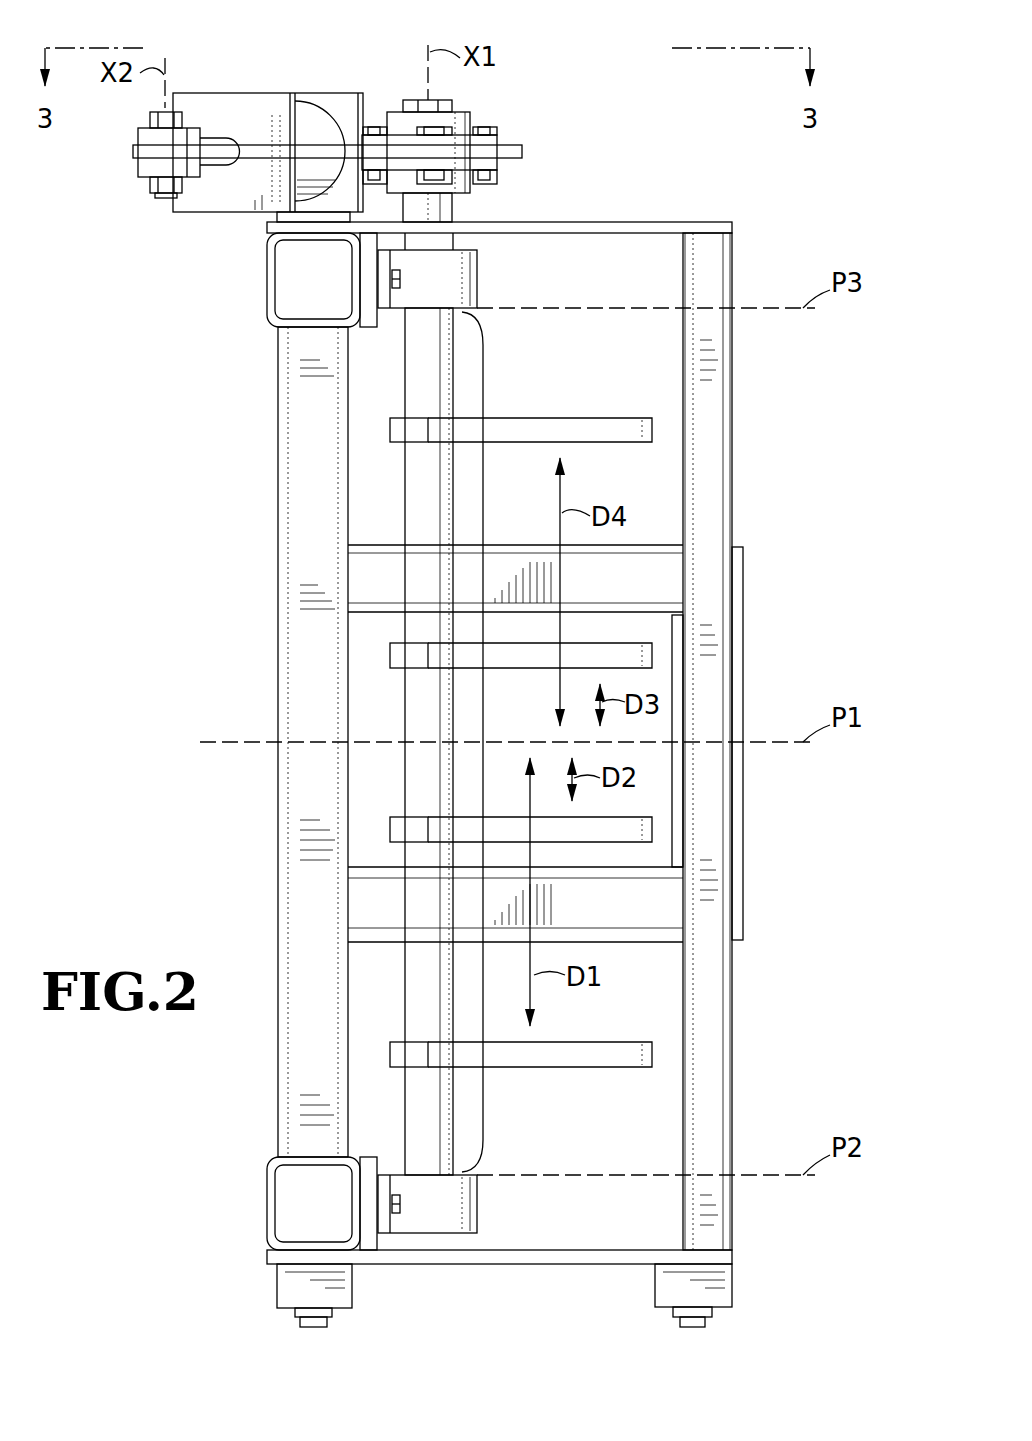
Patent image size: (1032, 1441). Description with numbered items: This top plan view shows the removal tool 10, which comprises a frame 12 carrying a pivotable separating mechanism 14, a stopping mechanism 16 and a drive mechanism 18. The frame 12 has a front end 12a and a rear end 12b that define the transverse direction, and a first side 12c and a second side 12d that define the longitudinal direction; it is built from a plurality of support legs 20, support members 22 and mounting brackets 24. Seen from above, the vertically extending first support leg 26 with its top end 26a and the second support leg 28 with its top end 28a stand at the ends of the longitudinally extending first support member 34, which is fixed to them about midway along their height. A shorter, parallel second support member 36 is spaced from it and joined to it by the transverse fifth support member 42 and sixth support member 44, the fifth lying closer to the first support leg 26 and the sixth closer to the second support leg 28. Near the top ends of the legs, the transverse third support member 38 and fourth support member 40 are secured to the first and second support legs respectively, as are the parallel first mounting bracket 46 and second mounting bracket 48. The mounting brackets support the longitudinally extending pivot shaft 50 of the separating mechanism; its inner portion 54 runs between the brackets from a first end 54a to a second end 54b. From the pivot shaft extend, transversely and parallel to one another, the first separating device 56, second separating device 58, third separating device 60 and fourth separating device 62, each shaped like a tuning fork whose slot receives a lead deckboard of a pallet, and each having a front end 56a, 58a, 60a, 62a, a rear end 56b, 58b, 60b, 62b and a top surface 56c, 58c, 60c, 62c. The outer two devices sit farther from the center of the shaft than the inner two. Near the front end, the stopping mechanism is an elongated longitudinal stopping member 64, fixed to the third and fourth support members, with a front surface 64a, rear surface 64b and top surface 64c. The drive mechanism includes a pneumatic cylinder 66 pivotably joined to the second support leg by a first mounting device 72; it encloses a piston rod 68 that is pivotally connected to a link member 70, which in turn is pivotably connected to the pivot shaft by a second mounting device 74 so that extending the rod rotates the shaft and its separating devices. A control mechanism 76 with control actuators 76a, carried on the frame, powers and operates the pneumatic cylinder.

The removal tool 10 is at (778, 190).
The frame 12 is at (267, 793).
The front end 12a is at (756, 741).
The rear end 12b is at (463, 742).
The first side 12c is at (499, 1311).
The second side 12d is at (499, 116).
The pivotable separating mechanism 14 is at (311, 704).
The stopping mechanism 16 is at (735, 741).
The drive mechanism 18 is at (360, 133).
The support legs 20 is at (250, 741).
The support members 22 is at (509, 742).
The mounting brackets 24 is at (500, 741).
The first support leg 26 is at (250, 1203).
The top end 26a is at (268, 1196).
The second support leg 28 is at (252, 280).
The top end 28a is at (268, 284).
The first support member 34 is at (267, 539).
The second support member 36 is at (752, 784).
The third support member 38 is at (558, 1265).
The fourth support member 40 is at (611, 222).
The fifth support member 42 is at (373, 902).
The sixth support member 44 is at (373, 579).
The first mounting bracket 46 is at (490, 1207).
The second mounting bracket 48 is at (490, 277).
The pivot shaft 50 is at (390, 497).
The inner portion 54 is at (372, 741).
The first end 54a is at (403, 1173).
The second end 54b is at (403, 310).
The first separating device 56 is at (527, 1075).
The front end 56a is at (527, 1075).
The rear end 56b is at (390, 1055).
The top surface 56c is at (604, 1053).
The second separating device 58 is at (529, 861).
The front end 58a is at (529, 861).
The rear end 58b is at (390, 830).
The top surface 58c is at (604, 830).
The third separating device 60 is at (527, 624).
The front end 60a is at (527, 624).
The rear end 60b is at (390, 655).
The top surface 60c is at (617, 643).
The fourth separating device 62 is at (534, 412).
The front end 62a is at (534, 412).
The rear end 62b is at (390, 424).
The top surface 62c is at (607, 422).
The stopping member 64 is at (748, 364).
The front surface 64a is at (735, 480).
The rear surface 64b is at (683, 470).
The top surface 64c is at (710, 512).
The pneumatic cylinder 66 is at (315, 125).
The piston rod 68 is at (215, 142).
The link member 70 is at (508, 143).
The first mounting device 72 is at (462, 110).
The second mounting device 74 is at (313, 214).
The control mechanism 76 is at (265, 1287).
The control actuators 76a is at (311, 1328).